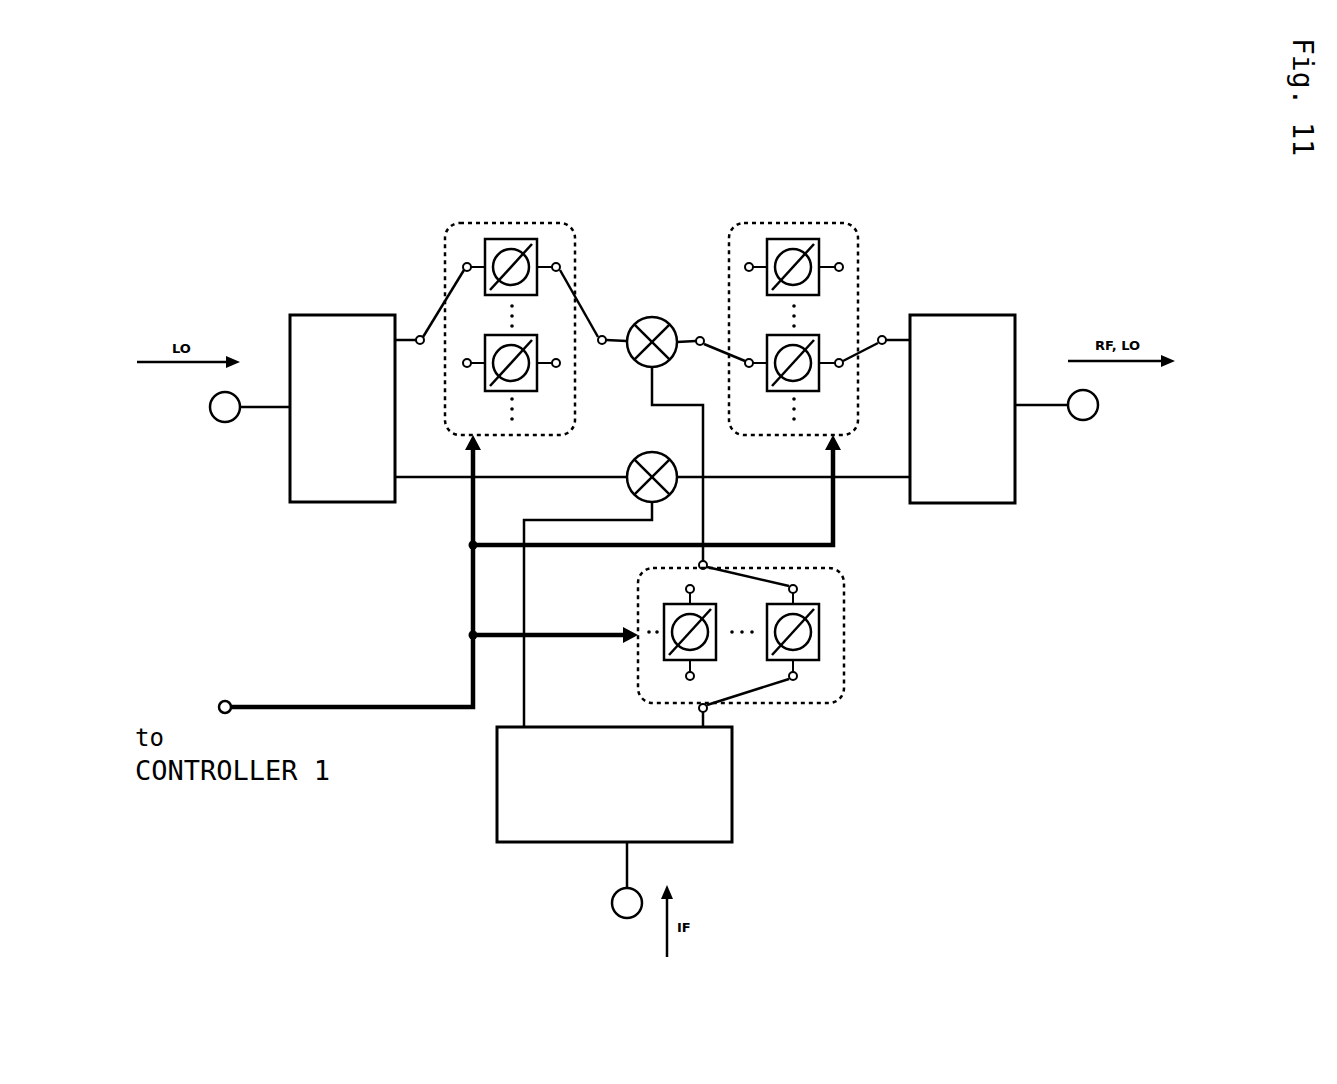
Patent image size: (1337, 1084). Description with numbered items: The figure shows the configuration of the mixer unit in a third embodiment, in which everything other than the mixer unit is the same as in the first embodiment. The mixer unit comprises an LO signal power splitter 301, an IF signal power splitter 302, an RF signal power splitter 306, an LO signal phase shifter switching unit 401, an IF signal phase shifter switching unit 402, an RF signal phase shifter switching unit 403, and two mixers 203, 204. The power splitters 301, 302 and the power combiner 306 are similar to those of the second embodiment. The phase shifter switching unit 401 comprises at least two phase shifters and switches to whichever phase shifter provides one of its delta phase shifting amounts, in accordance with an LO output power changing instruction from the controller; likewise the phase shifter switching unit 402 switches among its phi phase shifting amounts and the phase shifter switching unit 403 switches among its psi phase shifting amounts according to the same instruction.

The LO signal power splitter 301 is at (309, 315).
The IF signal power splitter 302 is at (738, 817).
The RF signal power splitter 306 is at (945, 315).
The LO signal phase shifter switching unit 401 is at (528, 223).
The IF signal phase shifter switching unit 402 is at (845, 682).
The RF signal phase shifter switching unit 403 is at (813, 223).
The mixer 203 is at (650, 318).
The mixer 204 is at (650, 452).